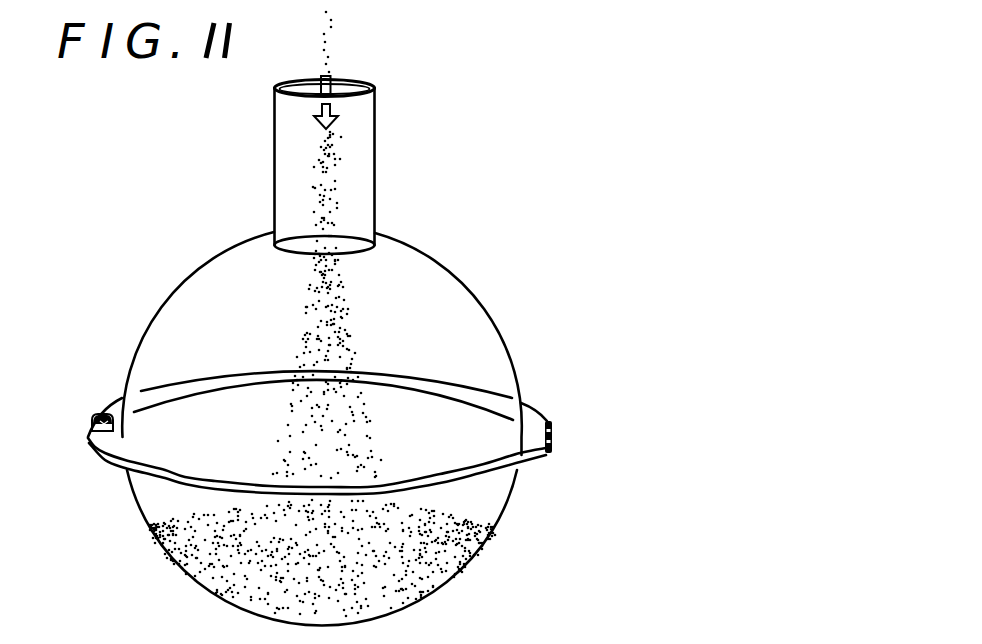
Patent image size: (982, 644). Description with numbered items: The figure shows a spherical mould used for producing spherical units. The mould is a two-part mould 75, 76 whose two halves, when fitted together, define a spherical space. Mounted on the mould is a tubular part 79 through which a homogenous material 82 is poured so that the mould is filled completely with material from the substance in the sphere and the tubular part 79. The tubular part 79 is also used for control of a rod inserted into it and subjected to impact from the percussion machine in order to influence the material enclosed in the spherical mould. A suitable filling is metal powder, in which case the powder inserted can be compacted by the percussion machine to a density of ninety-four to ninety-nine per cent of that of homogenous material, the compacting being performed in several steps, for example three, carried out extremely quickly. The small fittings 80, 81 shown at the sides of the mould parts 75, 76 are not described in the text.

The mould part 75 is at (485, 318).
The mould part 76 is at (448, 553).
The tubular part 79 is at (365, 177).
The right clamp clip 80 is at (550, 421).
The left clamp clip 81 is at (102, 417).
The homogenous material 82 is at (330, 290).